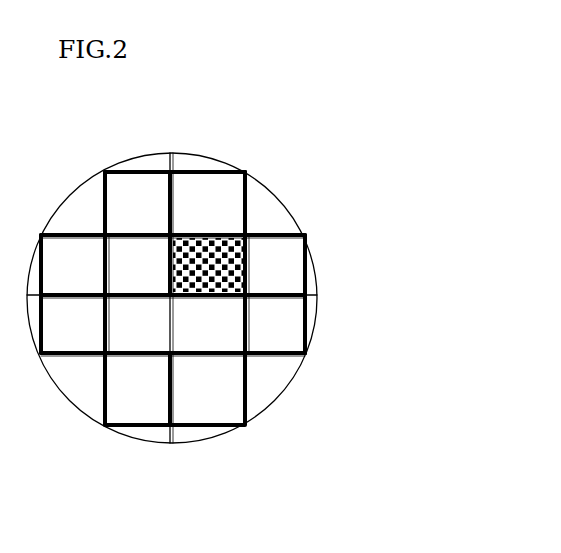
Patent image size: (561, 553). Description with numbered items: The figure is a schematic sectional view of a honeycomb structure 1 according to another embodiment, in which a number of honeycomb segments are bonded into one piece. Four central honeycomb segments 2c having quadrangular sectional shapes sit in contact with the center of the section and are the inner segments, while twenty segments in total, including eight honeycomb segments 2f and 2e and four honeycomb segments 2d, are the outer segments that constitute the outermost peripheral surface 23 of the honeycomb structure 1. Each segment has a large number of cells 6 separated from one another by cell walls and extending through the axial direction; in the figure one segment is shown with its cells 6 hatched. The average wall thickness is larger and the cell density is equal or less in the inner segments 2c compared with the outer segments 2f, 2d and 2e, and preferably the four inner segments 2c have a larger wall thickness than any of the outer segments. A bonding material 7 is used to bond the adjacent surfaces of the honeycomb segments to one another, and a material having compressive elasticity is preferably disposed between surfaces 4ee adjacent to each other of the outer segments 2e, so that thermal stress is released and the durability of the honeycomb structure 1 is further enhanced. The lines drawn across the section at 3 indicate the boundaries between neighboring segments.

The honeycomb structure 1 is at (194, 139).
The central honeycomb segment 2c is at (220, 340).
The honeycomb segment 2d is at (262, 198).
The honeycomb segment 2e is at (313, 316).
The honeycomb segment 2f is at (292, 338).
The scribe line 3 is at (318, 296).
The adjacent surfaces of outer segments 4ee is at (163, 432).
The cell 6 is at (260, 233).
The bonding material 7 is at (100, 398).
The outermost peripheral surface 23 is at (290, 382).